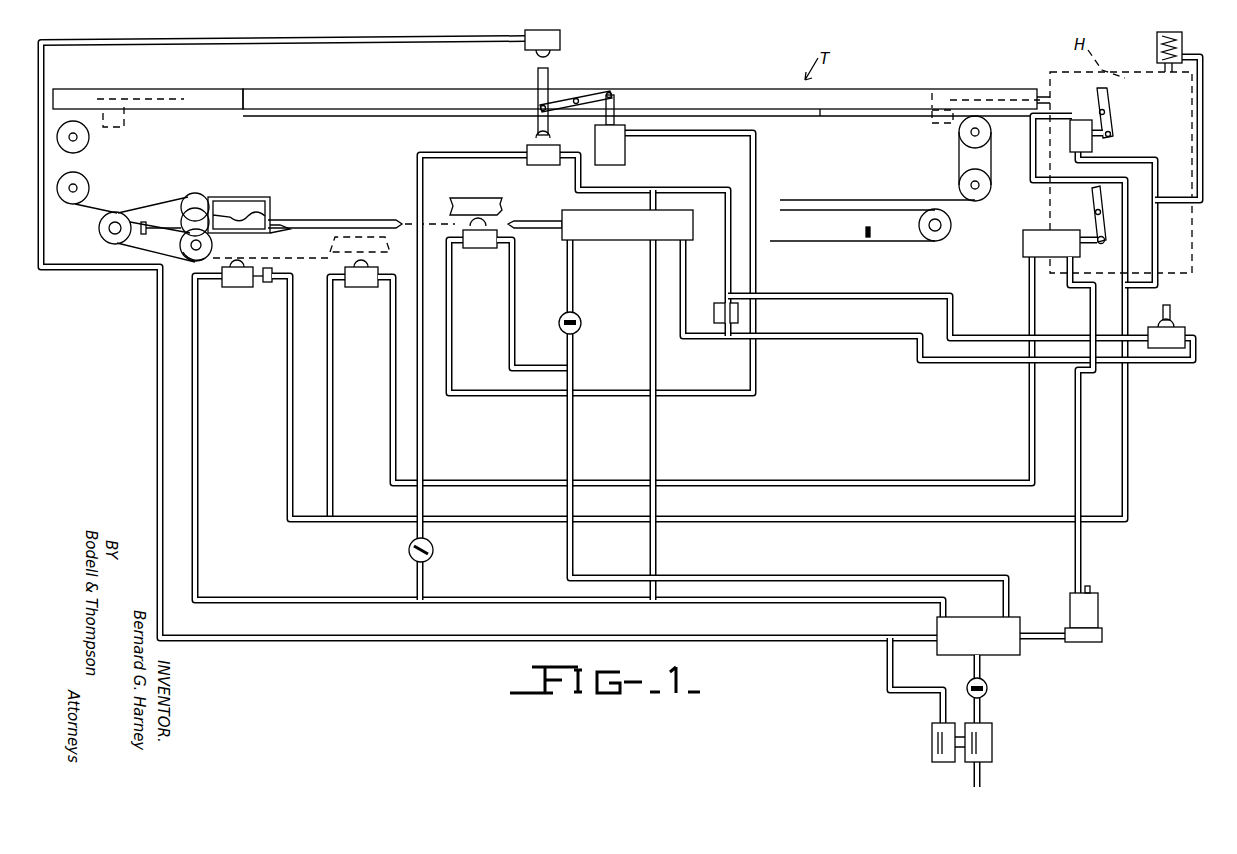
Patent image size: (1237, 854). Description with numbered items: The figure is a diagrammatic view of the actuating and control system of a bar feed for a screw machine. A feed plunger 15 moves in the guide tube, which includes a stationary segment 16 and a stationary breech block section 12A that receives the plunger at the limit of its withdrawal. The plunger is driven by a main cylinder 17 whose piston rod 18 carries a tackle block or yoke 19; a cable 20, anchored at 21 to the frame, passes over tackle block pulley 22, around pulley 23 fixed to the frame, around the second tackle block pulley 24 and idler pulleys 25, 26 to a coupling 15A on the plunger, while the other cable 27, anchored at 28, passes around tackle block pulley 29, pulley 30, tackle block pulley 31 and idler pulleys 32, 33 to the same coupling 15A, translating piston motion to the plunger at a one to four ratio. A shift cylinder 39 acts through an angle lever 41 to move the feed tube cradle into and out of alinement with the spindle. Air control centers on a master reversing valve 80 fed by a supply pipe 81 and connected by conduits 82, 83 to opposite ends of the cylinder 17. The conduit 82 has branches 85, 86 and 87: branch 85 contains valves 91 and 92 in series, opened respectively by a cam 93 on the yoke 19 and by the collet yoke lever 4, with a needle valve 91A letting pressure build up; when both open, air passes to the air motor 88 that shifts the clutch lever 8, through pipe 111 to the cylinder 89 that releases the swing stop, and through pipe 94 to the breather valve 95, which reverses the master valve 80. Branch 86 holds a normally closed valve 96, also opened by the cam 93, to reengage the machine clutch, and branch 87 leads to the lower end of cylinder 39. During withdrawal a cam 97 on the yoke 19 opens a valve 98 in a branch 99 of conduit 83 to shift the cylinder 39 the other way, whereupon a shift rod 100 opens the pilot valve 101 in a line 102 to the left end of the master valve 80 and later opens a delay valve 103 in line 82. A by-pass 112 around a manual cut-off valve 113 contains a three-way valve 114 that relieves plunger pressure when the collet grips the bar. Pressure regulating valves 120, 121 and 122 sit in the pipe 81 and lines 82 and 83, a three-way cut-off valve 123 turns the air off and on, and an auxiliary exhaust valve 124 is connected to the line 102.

The yoke lever 4 is at (1110, 118).
The shift lever 8 is at (1094, 222).
The stationary breech block section 12A is at (182, 92).
The feed plunger 15 is at (140, 95).
The coupling 15A is at (935, 125).
The stationary segment 16 is at (436, 100).
The main cylinder 17 is at (877, 285).
The piston rod 18 is at (364, 220).
The tackle block 19 is at (266, 199).
The cable 20 is at (912, 202).
The cable anchor 21 is at (872, 232).
The tackle block pulley 22 is at (184, 238).
The pulley 23 is at (951, 229).
The second tackle block pulley 24 is at (192, 200).
The idler pulley 25 is at (992, 185).
The idler pulley 26 is at (991, 132).
The cable 27 is at (818, 118).
The cable anchor 28 is at (143, 220).
The tackle block pulley 29 is at (200, 192).
The pulley 30 is at (100, 232).
The tackle block pulley 31 is at (188, 258).
The idler pulley 32 is at (78, 188).
The idler pulley 33 is at (78, 137).
The shift cylinder 39 is at (640, 146).
The angle lever 41 is at (596, 100).
The master reversing valve 80 is at (978, 636).
The supply pipe 81 is at (981, 706).
The conduit 82 is at (734, 192).
The conduit 83 is at (916, 575).
The branch 85 is at (842, 520).
The branch 86 is at (836, 480).
The branch 87 is at (656, 437).
The air motor 88 is at (1040, 228).
The cylinder 89 is at (1184, 44).
The valve 91 is at (234, 288).
The needle valve 91A is at (266, 285).
The valve 92 is at (1094, 144).
The cam 93 is at (272, 244).
The pipe 94 is at (1080, 564).
The breather valve 95 is at (1098, 608).
The valve 96 is at (364, 288).
The cam 97 is at (236, 212).
The valve 98 is at (480, 250).
The branch 99 is at (510, 292).
The shift rod 100 is at (550, 88).
The pilot valve 101 is at (562, 42).
The line 102 is at (368, 44).
The valve 103 is at (548, 168).
The pipe 111 is at (1192, 124).
The by-pass 112 is at (934, 292).
The cut-off valve 113 is at (740, 316).
The three-way valve 114 is at (1166, 350).
The pressure regulating valve 120 is at (988, 684).
The pressure regulating valve 121 is at (580, 322).
The pressure regulating valve 122 is at (432, 553).
The cut-off valve 123 is at (994, 740).
The auxiliary valve 124 is at (930, 728).